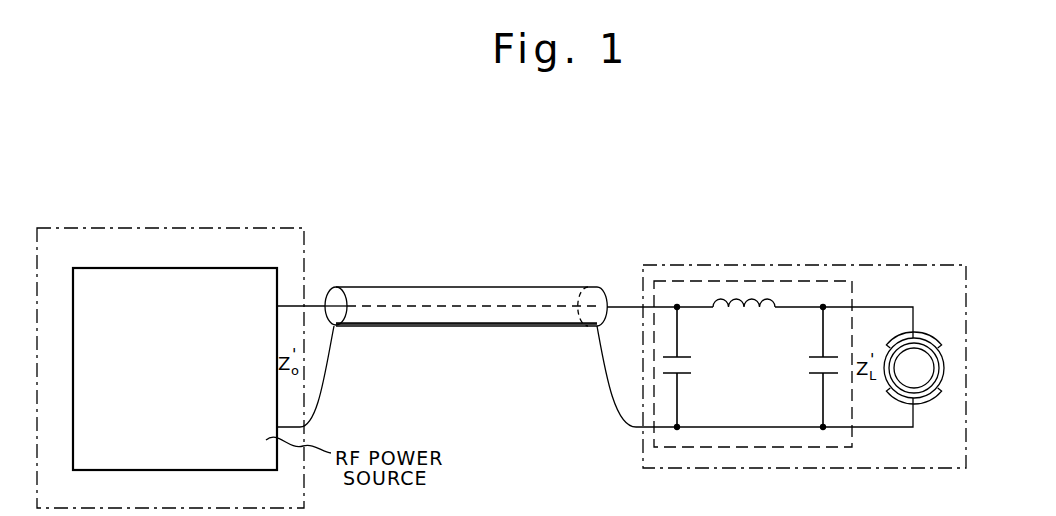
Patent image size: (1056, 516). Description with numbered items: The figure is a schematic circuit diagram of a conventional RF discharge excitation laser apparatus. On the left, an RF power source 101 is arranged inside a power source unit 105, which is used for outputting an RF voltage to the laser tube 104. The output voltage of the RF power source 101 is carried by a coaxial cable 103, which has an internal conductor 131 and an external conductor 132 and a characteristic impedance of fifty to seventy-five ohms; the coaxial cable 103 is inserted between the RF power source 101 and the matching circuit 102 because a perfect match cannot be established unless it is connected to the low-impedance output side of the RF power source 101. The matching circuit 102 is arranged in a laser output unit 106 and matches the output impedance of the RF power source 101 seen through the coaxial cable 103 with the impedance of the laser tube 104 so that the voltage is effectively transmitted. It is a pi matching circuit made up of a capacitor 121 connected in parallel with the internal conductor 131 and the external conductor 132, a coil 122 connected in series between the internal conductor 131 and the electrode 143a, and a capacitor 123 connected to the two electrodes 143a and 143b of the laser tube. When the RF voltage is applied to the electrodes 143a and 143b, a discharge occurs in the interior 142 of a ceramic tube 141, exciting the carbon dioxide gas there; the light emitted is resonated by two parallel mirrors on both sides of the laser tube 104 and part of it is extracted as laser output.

The RF power source 101 is at (176, 268).
The power source unit 105 is at (236, 228).
The coaxial cable 103 is at (492, 287).
The internal conductor 131 is at (431, 313).
The external conductor 132 is at (538, 326).
The matching circuit 102 is at (791, 281).
The laser output unit 106 is at (871, 265).
The coil 122 is at (741, 304).
The capacitor 121 is at (684, 374).
The capacitor 123 is at (814, 356).
The laser tube 104 is at (947, 347).
The ceramic tube 141 is at (945, 368).
The interior of ceramic tube 142 is at (922, 371).
The electrode 143a is at (920, 335).
The electrode 143b is at (930, 399).